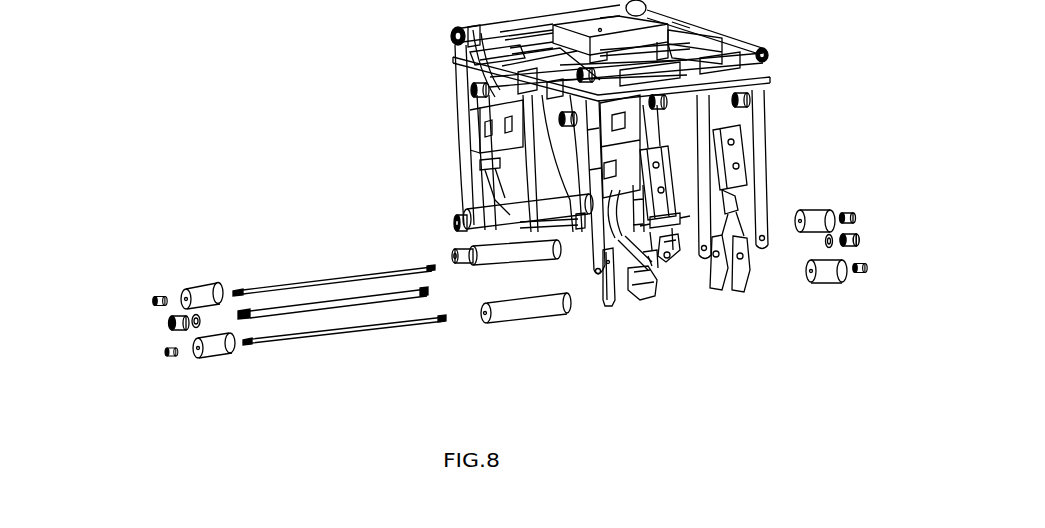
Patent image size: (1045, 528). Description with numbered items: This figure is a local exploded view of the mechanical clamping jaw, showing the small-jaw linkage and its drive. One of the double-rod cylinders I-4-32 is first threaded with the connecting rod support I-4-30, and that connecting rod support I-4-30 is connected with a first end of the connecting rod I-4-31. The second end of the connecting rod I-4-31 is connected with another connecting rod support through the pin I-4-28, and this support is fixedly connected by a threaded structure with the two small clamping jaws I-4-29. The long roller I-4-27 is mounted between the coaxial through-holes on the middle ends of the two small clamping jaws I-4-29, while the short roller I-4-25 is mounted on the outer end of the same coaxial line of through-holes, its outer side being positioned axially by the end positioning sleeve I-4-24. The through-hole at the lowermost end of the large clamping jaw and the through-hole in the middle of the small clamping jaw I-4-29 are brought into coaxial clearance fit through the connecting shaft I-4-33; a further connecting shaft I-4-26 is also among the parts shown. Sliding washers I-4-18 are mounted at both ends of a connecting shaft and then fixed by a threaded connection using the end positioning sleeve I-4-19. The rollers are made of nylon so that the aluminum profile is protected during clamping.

The sliding washer I-4-18 is at (300, 411).
The end positioning sleeve I-4-19 is at (170, 325).
The end positioning sleeve I-4-24 is at (153, 297).
The short roller I-4-25 is at (200, 296).
The connecting shaft I-4-26 is at (384, 272).
The long roller I-4-27 is at (462, 217).
The pin I-4-28 is at (593, 273).
The small clamping jaw I-4-29 is at (611, 300).
The connecting rod support I-4-30 is at (643, 285).
The connecting rod I-4-31 is at (663, 267).
The double-rod cylinder I-4-32 is at (660, 203).
The connecting shaft I-4-33 is at (333, 307).